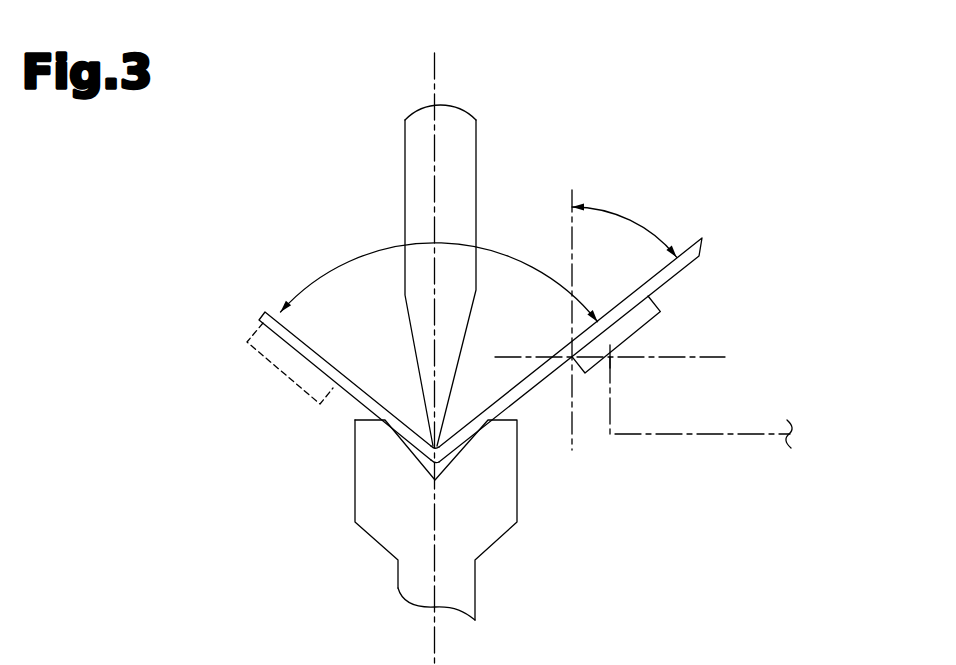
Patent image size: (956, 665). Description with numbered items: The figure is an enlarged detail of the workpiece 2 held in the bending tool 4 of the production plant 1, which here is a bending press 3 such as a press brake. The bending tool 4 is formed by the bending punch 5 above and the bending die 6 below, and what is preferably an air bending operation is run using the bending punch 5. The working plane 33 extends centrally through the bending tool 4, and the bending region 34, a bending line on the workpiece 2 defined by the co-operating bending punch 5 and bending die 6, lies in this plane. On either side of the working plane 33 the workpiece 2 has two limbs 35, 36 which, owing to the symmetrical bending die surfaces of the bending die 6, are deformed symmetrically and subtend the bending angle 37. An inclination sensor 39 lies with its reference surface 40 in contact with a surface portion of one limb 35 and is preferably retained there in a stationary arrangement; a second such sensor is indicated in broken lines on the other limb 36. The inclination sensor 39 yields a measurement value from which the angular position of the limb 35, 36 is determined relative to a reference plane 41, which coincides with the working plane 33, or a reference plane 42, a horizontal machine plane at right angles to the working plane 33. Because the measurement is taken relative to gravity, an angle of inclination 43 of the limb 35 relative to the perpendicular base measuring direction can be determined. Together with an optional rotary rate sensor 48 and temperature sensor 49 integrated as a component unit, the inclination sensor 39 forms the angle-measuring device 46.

The production plant 1 is at (650, 122).
The workpiece 2 is at (450, 321).
The bending press 3 is at (317, 532).
The bending tool 4 is at (329, 232).
The bending punch 5 is at (457, 132).
The bending die 6 is at (412, 542).
The working plane 33 is at (432, 88).
The bending region 34 is at (412, 407).
The limb 35 is at (691, 247).
The limb 36 is at (258, 318).
The bending angle 37 is at (496, 245).
The inclination sensor 39 is at (444, 350).
The rotary rate sensor 48 is at (444, 350).
The temperature sensor 49 is at (268, 350).
The reference surface 40 is at (604, 325).
The reference plane 41 is at (583, 421).
The reference plane 42 is at (728, 359).
The angle of inclination 43 is at (650, 230).
The angle-measuring device 46 is at (645, 345).